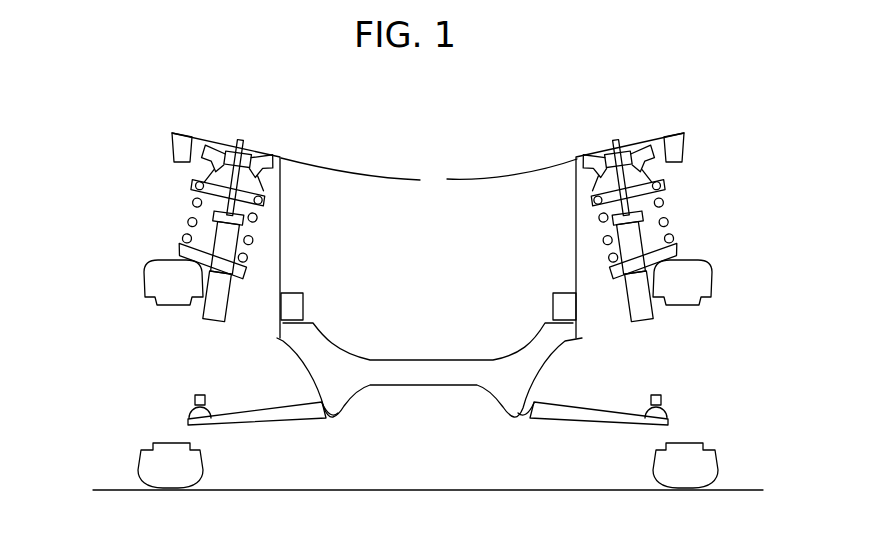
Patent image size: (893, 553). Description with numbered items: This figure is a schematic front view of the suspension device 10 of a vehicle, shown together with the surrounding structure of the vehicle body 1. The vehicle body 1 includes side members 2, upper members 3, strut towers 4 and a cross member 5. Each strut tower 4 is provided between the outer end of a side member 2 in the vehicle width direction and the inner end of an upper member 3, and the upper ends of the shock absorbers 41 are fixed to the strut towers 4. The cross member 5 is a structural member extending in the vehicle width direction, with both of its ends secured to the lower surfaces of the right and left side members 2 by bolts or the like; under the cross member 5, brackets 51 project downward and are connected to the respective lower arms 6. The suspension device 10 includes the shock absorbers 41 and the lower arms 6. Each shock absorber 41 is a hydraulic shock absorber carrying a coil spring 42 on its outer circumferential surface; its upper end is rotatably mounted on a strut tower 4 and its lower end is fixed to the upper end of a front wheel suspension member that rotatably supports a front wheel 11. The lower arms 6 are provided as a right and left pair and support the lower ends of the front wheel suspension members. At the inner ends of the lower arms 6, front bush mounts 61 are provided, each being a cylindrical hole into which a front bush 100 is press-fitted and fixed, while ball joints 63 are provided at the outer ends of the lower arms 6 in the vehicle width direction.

The vehicle body 1 is at (402, 160).
The side members 2 is at (552, 293).
The upper members 3 is at (172, 142).
The strut towers 4 is at (429, 173).
The cross member 5 is at (405, 358).
The lower arms 6 is at (252, 407).
The suspension device 10 is at (80, 330).
The front wheel 11 is at (140, 276).
The shock absorbers 41 is at (213, 220).
The coil spring 42 is at (192, 200).
The brackets 51 is at (520, 397).
The front bush mounts 61 is at (452, 440).
The ball joints 63 is at (187, 412).
The front bush 100 is at (328, 421).